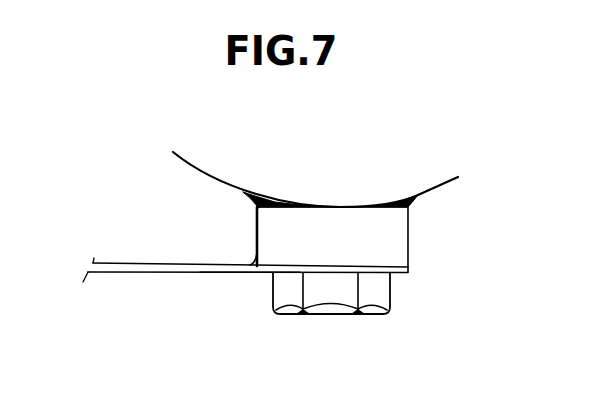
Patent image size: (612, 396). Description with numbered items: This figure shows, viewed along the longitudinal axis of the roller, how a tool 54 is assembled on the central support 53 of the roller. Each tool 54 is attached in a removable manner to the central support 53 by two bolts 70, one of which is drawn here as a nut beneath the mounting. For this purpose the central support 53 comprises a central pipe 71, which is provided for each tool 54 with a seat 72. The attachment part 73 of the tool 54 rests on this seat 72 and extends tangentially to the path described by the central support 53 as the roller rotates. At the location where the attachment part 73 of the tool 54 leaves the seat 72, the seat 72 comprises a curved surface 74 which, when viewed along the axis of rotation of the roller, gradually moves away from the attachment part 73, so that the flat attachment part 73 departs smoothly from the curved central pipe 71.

The central support 53 is at (182, 160).
The central pipe 71 is at (449, 179).
The seat 72 is at (400, 235).
The curved surface 74 is at (258, 264).
The tool 54 is at (245, 283).
The attachment part 73 is at (247, 272).
The bolt 70 is at (333, 307).